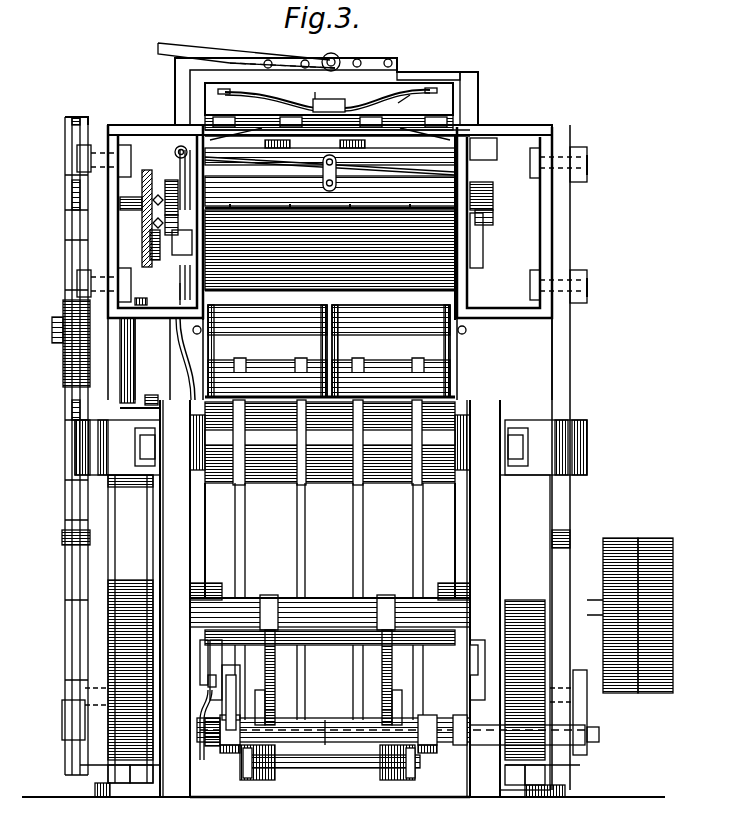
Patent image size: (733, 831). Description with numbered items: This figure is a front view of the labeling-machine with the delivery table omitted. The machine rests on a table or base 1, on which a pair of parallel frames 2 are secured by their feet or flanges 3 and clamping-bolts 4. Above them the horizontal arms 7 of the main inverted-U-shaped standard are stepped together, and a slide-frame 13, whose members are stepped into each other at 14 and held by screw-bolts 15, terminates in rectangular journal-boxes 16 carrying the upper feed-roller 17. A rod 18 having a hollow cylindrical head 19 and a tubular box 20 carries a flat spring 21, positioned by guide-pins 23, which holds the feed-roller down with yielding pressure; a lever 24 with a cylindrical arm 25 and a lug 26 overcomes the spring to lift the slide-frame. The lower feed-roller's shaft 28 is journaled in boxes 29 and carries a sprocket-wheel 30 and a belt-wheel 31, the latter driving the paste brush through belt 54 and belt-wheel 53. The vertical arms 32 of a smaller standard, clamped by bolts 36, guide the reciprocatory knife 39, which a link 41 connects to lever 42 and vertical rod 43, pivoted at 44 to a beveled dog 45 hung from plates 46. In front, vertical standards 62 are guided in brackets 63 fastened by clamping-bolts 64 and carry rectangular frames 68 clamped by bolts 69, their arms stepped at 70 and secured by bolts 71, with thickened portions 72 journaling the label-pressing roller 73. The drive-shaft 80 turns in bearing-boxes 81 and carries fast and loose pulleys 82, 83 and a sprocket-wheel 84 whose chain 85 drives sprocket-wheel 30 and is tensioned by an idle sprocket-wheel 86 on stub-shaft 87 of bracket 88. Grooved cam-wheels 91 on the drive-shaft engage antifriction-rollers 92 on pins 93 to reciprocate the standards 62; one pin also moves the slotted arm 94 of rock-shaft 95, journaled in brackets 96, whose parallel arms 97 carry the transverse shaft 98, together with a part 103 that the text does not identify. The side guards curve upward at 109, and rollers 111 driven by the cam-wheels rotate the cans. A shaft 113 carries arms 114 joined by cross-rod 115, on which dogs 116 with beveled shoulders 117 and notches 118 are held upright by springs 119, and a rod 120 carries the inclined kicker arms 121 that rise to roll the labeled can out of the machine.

The table or base 1 is at (343, 789).
The parallel frames 2 is at (330, 598).
The feet or flanges 3 is at (95, 789).
The clamping-bolts 4 is at (326, 769).
The horizontal arms 7 is at (207, 75).
The slide-frame 13 is at (178, 72).
The stepped joint 14 is at (268, 60).
The screw-bolts 15 is at (388, 59).
The rectangular journal-boxes 16 is at (178, 145).
The upper feed-roller 17 is at (401, 100).
The rod 18 is at (314, 92).
The hollow cylindrical head 19 is at (358, 59).
The tubular box 20 is at (329, 106).
The flat spring 21 is at (329, 99).
The guide-pins 23 is at (235, 94).
The lever 24 is at (200, 46).
The cylindrical arm 25 is at (333, 55).
The lug 26 is at (304, 60).
The shaft 28 is at (141, 211).
The boxes 29 is at (326, 199).
The sprocket-wheel 30 is at (72, 130).
The belt-wheel 31 is at (145, 172).
The vertical arms 32 is at (198, 360).
The bolts 36 is at (205, 652).
The reciprocatory knife 39 is at (330, 178).
The link 41 is at (336, 183).
The lever 42 is at (395, 140).
The vertical rod 43 is at (180, 292).
The pivotal connection 44 is at (222, 697).
The beveled dog 45 is at (202, 700).
The plates 46 is at (208, 680).
The belt-wheel 53 is at (152, 268).
The belt 54 is at (149, 248).
The vertical standards 62 is at (90, 498).
The guide-brackets 63 is at (76, 442).
The clamping-bolts 64 is at (138, 443).
The rectangular frames 68 is at (164, 318).
The bolts 69 is at (76, 160).
The stepped joint 70 is at (330, 138).
The bolts 71 is at (226, 127).
The thickened arms 72 is at (330, 221).
The roller 73 is at (329, 227).
The drive-shaft 80 is at (326, 605).
The bearing-boxes 81 is at (208, 585).
The fast pulley 82 is at (612, 615).
The loose pulley 83 is at (655, 615).
The sprocket-wheel 84 is at (72, 618).
The power-transmitting chain 85 is at (62, 538).
The idle sprocket-wheel 86 is at (55, 340).
The stub-shaft 87 is at (122, 352).
The bracket 88 is at (140, 390).
The grooved cam-wheels 91 is at (130, 629).
The antifriction-rollers 92 is at (128, 680).
The pins 93 is at (85, 690).
The arm 94 is at (599, 726).
The rock-shaft 95 is at (391, 730).
The brackets 96 is at (190, 750).
The parallel arms 97 is at (228, 753).
The transverse shaft 98 is at (330, 637).
The block 103 is at (205, 738).
The curved guard extension 109 is at (218, 372).
The rollers 111 is at (120, 406).
The shaft 113 is at (330, 515).
The arms 114 is at (380, 665).
The cross-rod 115 is at (332, 770).
The dogs 116 is at (262, 780).
The beveled shoulders 117 is at (380, 705).
The notches 118 is at (382, 715).
The springs 119 is at (242, 770).
The rod 120 is at (325, 725).
The kicker arms 121 is at (292, 552).